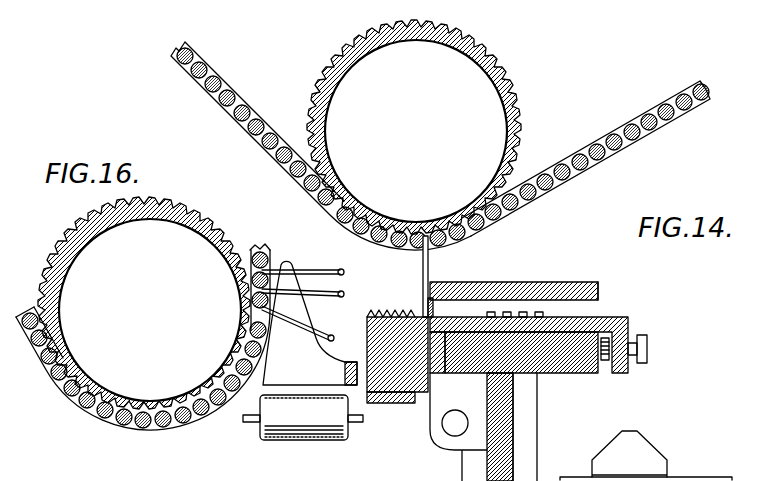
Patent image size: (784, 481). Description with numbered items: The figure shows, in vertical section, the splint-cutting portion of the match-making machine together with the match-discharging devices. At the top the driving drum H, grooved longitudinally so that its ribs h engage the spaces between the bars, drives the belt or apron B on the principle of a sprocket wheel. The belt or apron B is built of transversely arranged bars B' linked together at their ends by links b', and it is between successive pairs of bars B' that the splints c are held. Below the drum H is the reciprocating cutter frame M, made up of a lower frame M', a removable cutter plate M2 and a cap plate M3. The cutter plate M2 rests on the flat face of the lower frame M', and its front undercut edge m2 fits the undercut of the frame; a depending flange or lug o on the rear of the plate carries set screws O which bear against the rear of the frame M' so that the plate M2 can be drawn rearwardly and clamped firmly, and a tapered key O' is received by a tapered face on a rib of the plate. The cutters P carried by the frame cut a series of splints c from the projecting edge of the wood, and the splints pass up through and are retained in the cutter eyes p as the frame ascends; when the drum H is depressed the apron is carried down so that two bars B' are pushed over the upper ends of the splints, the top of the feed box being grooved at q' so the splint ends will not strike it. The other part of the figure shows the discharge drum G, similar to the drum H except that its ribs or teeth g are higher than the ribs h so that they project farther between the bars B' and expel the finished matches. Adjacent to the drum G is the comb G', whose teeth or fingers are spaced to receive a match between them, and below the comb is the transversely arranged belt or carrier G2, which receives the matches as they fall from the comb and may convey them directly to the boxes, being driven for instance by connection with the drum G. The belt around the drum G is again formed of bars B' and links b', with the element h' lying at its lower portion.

In FIG. 14, the driving drum H is at (333, 97).
In FIG. 14, the ribs h is at (427, 127).
In FIG. 14, the belt or apron B is at (586, 158).
In FIG. 16, the transversely arranged bars B' is at (143, 352).
In FIG. 14, the transversely arranged bars B' is at (423, 165).
In FIG. 16, the links b' is at (145, 358).
In FIG. 14, the links b' is at (443, 164).
In FIG. 14, the splints c is at (416, 276).
In FIG. 14, the groove q' is at (391, 303).
In FIG. 14, the block R is at (397, 354).
In FIG. 14, the front undercut edge m2 is at (425, 394).
In FIG. 14, the cutter eyes p is at (433, 312).
In FIG. 14, the cap plate M3 is at (523, 268).
In FIG. 14, the cutters P is at (598, 297).
In FIG. 14, the removable cutter plate M2 is at (598, 318).
In FIG. 14, the set screws O is at (658, 344).
In FIG. 14, the depending flange or lug o is at (636, 366).
In FIG. 14, the cutter frame M is at (514, 406).
In FIG. 14, the lower frame M' is at (643, 421).
In FIG. 14, the tapered key O' is at (669, 470).
In FIG. 16, the discharge drum G is at (150, 310).
In FIG. 16, the ribs or teeth g is at (238, 326).
In FIG. 16, the belt rollers h' is at (153, 438).
In FIG. 16, the comb G' is at (309, 323).
In FIG. 16, the belt or carrier G2 is at (303, 417).